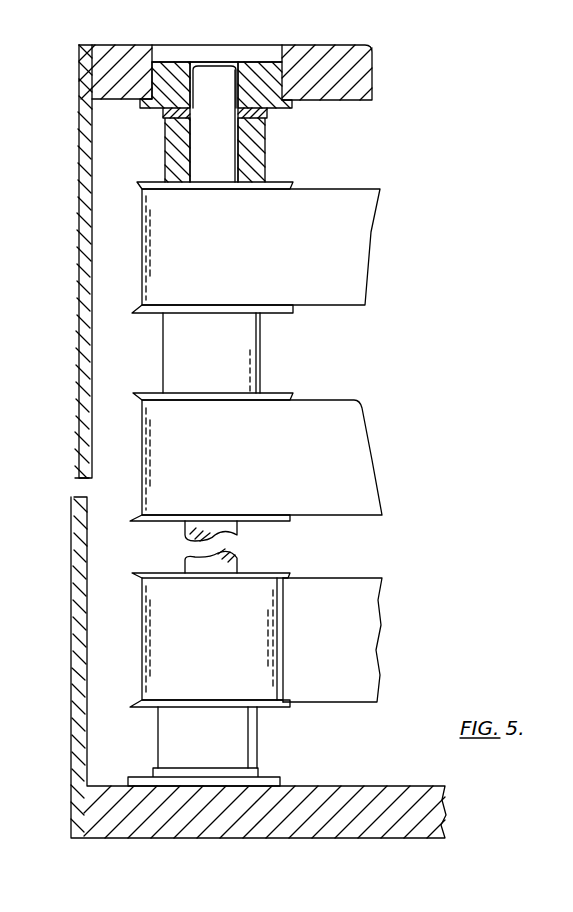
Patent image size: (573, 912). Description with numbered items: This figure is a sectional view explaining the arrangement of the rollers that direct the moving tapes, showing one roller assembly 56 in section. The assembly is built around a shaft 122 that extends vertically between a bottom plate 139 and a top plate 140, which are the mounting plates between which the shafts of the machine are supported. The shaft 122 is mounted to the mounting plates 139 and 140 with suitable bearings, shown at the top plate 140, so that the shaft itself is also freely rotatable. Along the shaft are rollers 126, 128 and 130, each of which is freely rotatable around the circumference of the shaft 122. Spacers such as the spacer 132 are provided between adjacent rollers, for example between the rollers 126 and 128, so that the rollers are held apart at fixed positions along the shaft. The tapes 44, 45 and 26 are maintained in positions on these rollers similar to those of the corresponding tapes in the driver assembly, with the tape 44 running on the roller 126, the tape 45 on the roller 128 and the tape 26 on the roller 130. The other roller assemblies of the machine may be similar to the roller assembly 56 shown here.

The top plate 140 is at (343, 62).
The shaft 122 is at (215, 140).
The roller assembly 56 is at (374, 158).
The roller 126 is at (287, 182).
The tape 44 is at (365, 207).
The spacer 132 is at (227, 343).
The roller 128 is at (283, 395).
The tape 45 is at (335, 417).
The roller 130 is at (277, 573).
The tape 26 is at (338, 667).
The bottom plate 139 is at (97, 802).